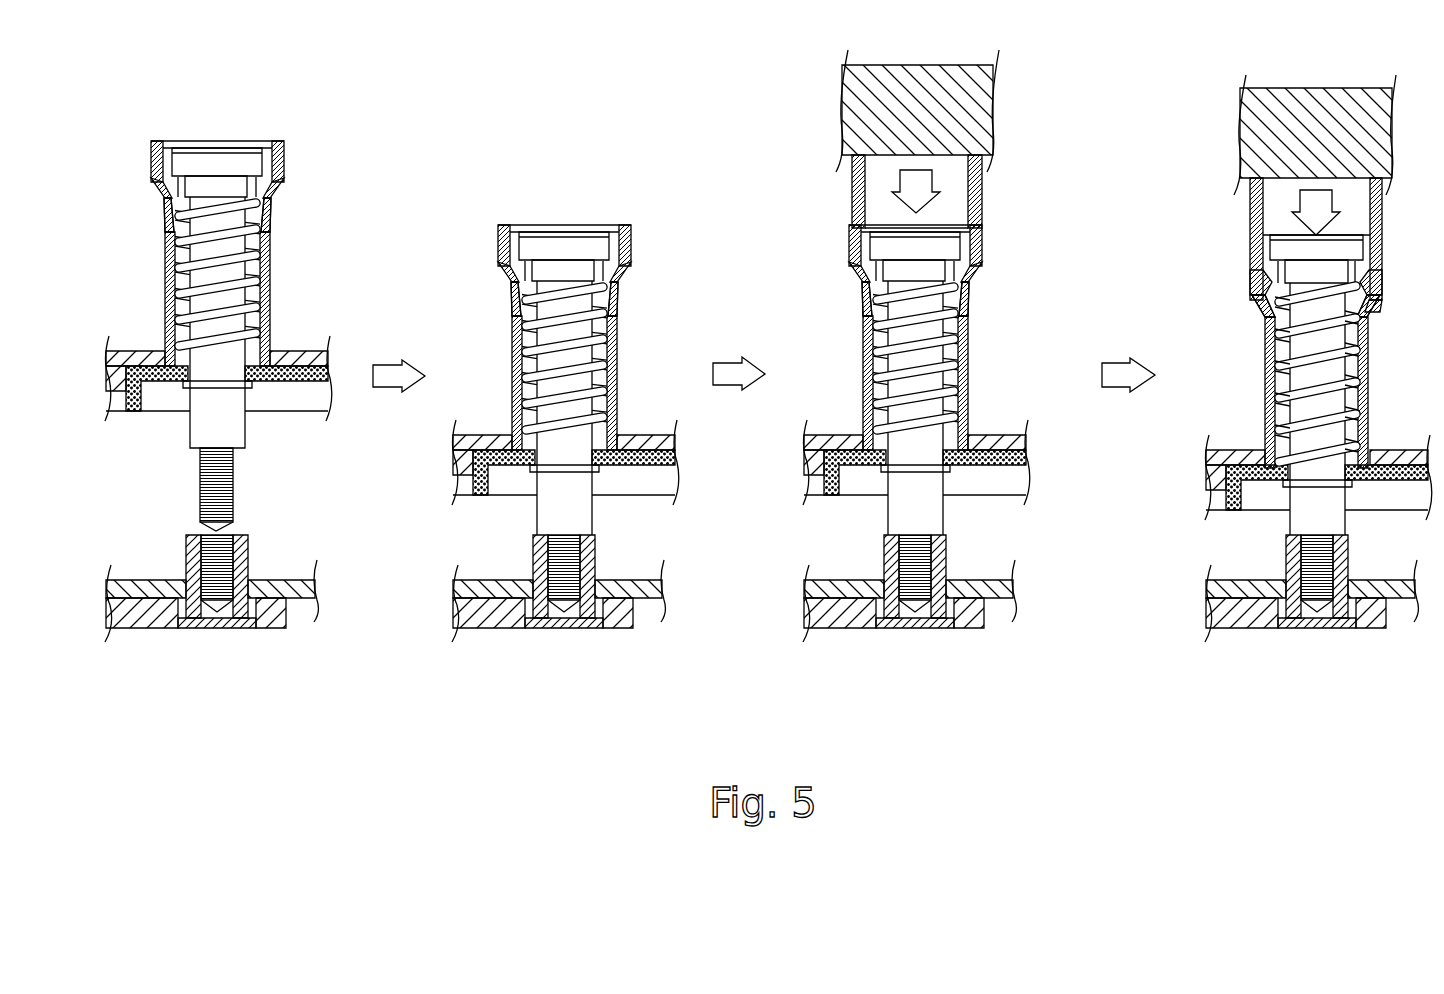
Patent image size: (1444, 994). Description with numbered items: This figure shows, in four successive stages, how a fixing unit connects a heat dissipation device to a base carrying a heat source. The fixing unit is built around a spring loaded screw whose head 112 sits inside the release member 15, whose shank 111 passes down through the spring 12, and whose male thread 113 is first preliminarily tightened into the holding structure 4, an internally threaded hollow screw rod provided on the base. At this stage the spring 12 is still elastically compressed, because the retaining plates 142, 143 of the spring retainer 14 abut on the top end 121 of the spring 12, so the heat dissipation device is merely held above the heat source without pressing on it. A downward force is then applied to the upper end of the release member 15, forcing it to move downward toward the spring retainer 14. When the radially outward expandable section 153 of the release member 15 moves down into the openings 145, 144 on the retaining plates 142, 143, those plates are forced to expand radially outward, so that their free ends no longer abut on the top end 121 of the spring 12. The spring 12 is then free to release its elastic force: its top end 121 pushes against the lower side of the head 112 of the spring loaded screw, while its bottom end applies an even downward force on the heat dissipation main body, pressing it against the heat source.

The holding structure 4 is at (246, 540).
The spring 12 is at (264, 271).
The spring retainer 14 is at (156, 216).
The release member 15 is at (284, 142).
The shank of spring loaded screw 111 is at (256, 293).
The head of spring loaded screw 112 is at (256, 163).
The male thread 113 is at (228, 578).
The top end of spring 121 is at (184, 196).
The retaining plate 142 is at (163, 205).
The retaining plate 143 is at (273, 228).
The opening 144 is at (1252, 278).
The opening 145 is at (1380, 280).
The radially outward expandable section 153 is at (272, 195).